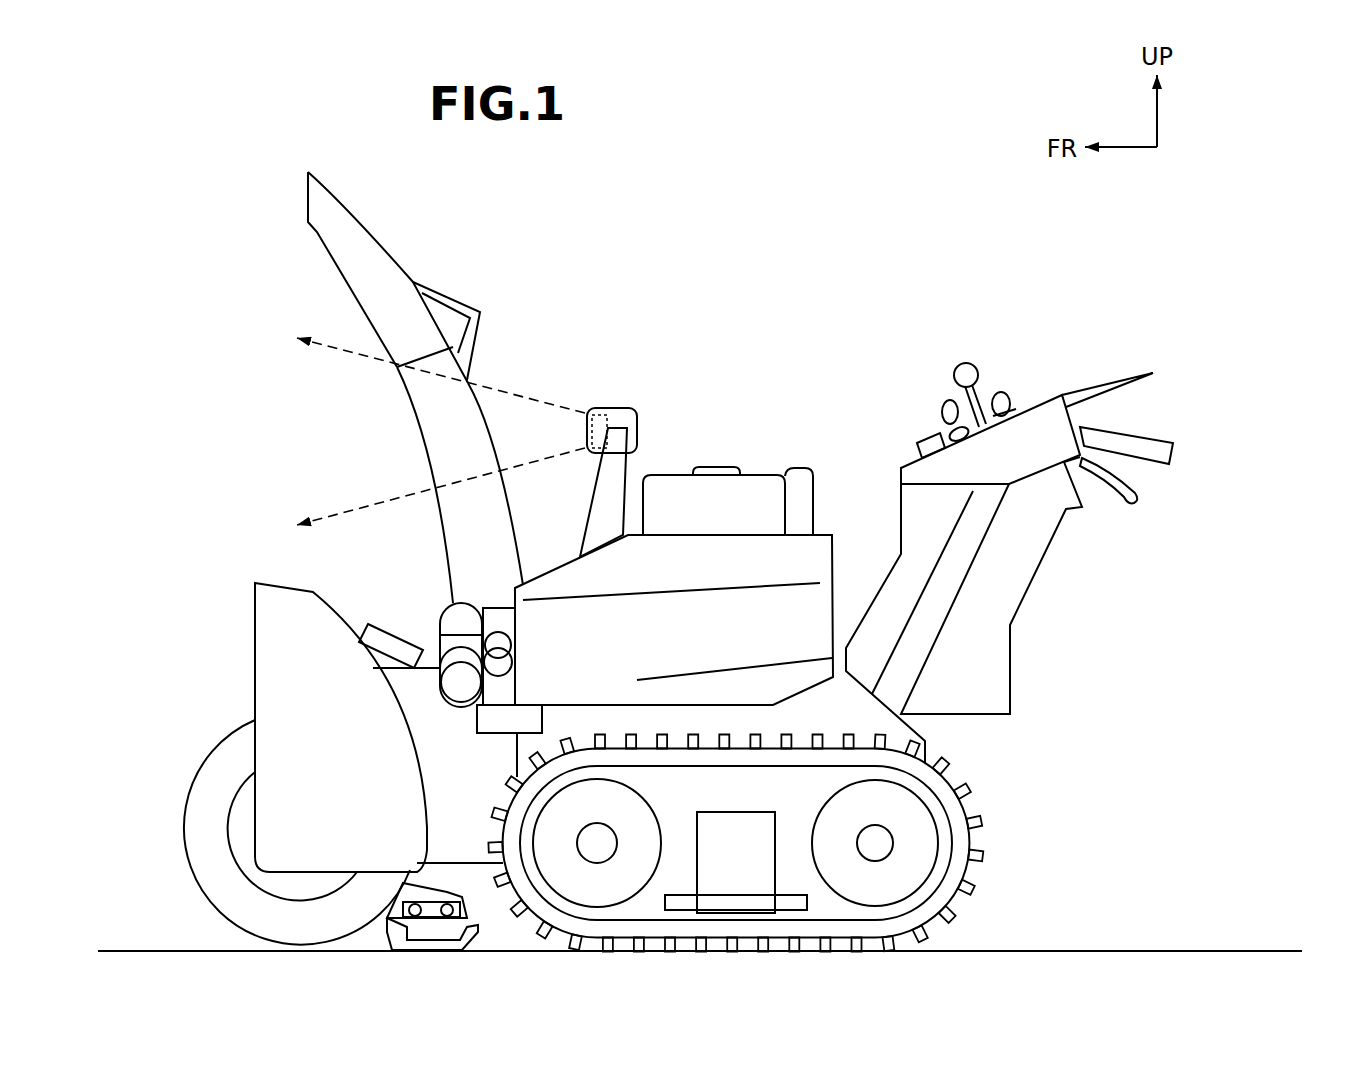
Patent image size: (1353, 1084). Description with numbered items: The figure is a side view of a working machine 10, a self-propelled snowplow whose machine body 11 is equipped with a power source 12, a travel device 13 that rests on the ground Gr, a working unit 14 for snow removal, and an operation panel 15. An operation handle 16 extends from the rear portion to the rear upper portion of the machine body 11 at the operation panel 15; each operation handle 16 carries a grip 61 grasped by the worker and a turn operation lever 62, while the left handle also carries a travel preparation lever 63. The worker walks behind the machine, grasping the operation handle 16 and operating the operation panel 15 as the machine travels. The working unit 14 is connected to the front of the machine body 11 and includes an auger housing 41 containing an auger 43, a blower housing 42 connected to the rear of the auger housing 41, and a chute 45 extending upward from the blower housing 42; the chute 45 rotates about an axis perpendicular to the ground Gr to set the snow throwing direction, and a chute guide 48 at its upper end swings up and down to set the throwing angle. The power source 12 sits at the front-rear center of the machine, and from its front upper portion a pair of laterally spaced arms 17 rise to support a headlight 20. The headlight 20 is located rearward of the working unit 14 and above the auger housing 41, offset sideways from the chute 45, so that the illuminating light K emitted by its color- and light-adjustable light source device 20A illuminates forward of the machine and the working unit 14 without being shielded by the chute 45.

The working machine 10 is at (198, 213).
The machine body 11 is at (884, 730).
The power source 12 is at (835, 568).
The travel device 13 is at (988, 842).
The working unit 14 is at (220, 585).
The operation panel 15 is at (1080, 418).
The operation handle 16 is at (1170, 459).
The arms 17 is at (608, 487).
The headlight 20 is at (571, 394).
The light source device 20A is at (587, 419).
The auger housing 41 is at (267, 640).
The blower housing 42 is at (462, 763).
The auger 43 is at (202, 835).
The chute 45 is at (420, 455).
The chute guide 48 is at (348, 252).
The grip 61 is at (1137, 448).
The turn operation lever 62 is at (1139, 496).
The travel preparation lever 63 is at (1130, 375).
The illuminating light K is at (515, 393).
The ground Gr is at (1268, 950).